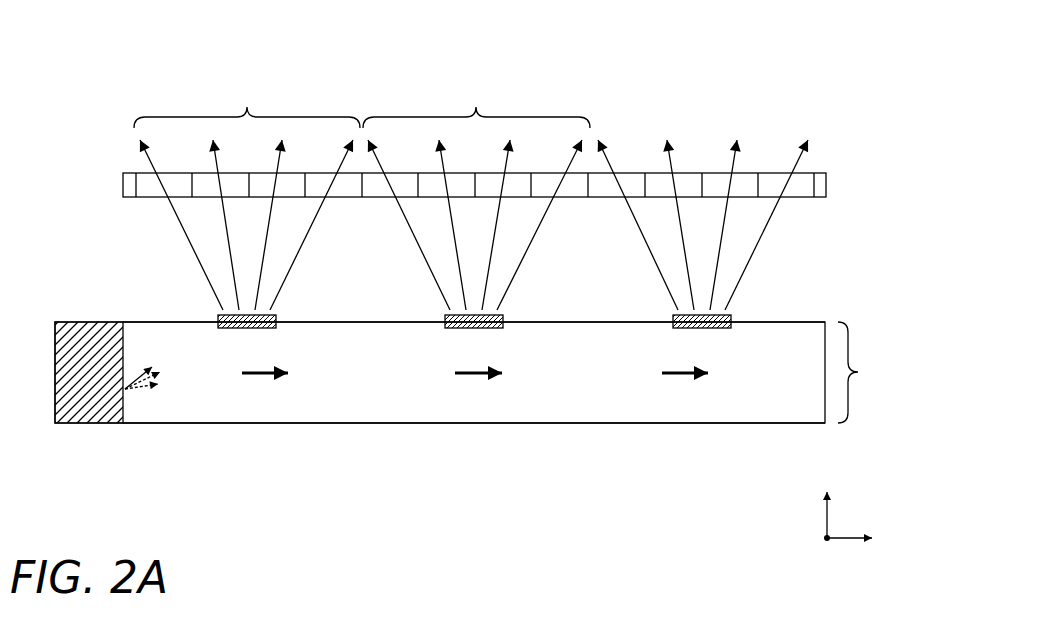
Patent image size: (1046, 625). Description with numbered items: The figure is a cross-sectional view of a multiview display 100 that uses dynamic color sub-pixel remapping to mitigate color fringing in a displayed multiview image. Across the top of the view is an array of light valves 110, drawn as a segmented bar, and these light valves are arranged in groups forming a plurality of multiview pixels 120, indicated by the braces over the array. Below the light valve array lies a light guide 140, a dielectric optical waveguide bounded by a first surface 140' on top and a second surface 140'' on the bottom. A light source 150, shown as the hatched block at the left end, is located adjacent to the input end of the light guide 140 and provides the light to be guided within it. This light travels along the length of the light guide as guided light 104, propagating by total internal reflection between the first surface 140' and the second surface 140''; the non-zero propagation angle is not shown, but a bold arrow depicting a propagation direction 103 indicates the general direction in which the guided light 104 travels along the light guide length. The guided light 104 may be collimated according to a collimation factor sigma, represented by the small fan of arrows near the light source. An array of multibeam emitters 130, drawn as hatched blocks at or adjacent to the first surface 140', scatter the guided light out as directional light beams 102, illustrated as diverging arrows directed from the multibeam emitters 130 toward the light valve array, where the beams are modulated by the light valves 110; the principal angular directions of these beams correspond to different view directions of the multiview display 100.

The multiview display 100 is at (806, 48).
The light valves 110 is at (116, 180).
The directional light beams 102 is at (828, 217).
The multiview pixels 120 is at (190, 80).
The multibeam emitters 130 is at (212, 298).
The propagation direction 103 is at (478, 393).
The guided light 104 is at (157, 395).
The light guide 140 is at (878, 372).
The first surface 140' is at (514, 303).
The second surface 140'' is at (517, 440).
The light source 150 is at (88, 437).